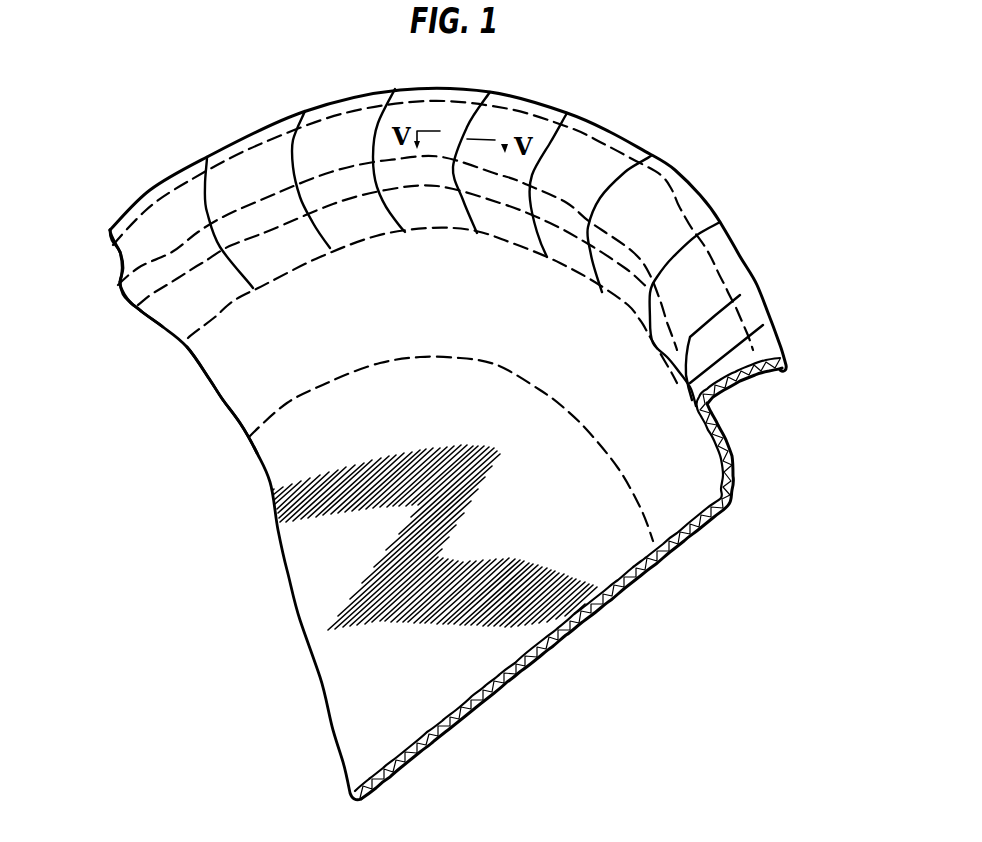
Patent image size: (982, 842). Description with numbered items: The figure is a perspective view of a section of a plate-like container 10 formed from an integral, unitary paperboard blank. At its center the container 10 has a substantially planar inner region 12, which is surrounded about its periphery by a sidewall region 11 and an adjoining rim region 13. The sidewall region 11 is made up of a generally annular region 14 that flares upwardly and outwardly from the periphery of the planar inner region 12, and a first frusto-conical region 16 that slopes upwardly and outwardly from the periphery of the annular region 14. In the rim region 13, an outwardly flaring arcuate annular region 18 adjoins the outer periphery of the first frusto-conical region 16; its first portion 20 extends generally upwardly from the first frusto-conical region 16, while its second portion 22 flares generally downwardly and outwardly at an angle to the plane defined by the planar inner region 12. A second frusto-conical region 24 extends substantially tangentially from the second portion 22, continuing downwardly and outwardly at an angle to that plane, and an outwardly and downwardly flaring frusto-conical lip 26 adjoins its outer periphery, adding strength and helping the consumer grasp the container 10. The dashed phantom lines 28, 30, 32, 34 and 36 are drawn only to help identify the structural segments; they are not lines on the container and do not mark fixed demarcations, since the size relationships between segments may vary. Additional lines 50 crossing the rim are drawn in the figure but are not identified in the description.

The container 10 is at (705, 165).
The sidewall region 11 is at (186, 384).
The planar inner region 12 is at (306, 606).
The rim region 13 is at (760, 394).
The annular region 14 is at (220, 390).
The first frusto-conical region 16 is at (158, 324).
The arcuate annular region 18 is at (123, 313).
The first portion 20 is at (140, 305).
The second portion 22 is at (120, 288).
The second frusto-conical region 24 is at (120, 259).
The frusto-conical lip 26 is at (752, 277).
The phantom line 28 is at (500, 367).
The phantom line 30 is at (373, 237).
The phantom line 32 is at (370, 194).
The phantom line 34 is at (327, 171).
The phantom line 36 is at (348, 111).
The transverse segment lines 50 is at (290, 173).